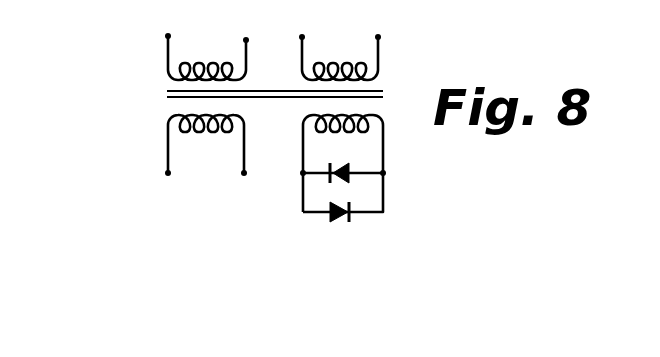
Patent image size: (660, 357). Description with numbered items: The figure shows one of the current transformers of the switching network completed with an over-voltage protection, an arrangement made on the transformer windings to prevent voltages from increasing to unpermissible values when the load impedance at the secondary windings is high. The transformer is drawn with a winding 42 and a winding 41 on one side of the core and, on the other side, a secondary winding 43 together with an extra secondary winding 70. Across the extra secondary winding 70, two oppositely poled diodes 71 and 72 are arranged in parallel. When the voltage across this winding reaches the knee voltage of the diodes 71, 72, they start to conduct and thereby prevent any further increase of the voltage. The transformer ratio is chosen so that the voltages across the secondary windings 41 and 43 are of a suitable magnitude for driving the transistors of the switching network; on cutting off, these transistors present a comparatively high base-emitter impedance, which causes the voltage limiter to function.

The secondary winding 41 is at (201, 62).
The transformer winding 42 is at (333, 63).
The secondary winding 43 is at (215, 131).
The extra secondary winding 70 is at (318, 121).
The diode 71 is at (350, 162).
The diode 72 is at (334, 222).